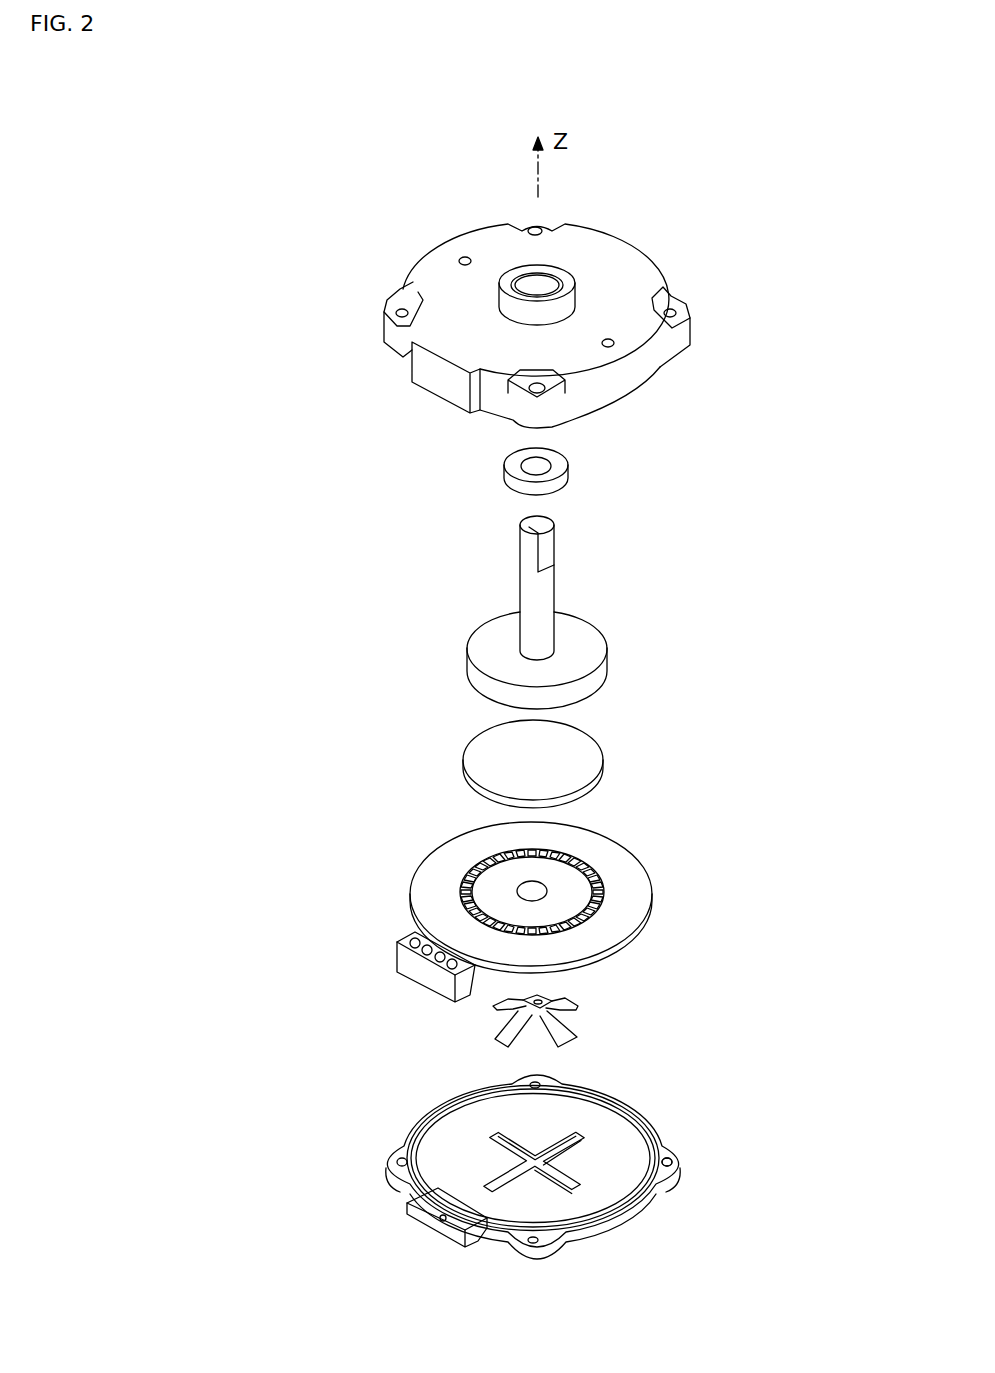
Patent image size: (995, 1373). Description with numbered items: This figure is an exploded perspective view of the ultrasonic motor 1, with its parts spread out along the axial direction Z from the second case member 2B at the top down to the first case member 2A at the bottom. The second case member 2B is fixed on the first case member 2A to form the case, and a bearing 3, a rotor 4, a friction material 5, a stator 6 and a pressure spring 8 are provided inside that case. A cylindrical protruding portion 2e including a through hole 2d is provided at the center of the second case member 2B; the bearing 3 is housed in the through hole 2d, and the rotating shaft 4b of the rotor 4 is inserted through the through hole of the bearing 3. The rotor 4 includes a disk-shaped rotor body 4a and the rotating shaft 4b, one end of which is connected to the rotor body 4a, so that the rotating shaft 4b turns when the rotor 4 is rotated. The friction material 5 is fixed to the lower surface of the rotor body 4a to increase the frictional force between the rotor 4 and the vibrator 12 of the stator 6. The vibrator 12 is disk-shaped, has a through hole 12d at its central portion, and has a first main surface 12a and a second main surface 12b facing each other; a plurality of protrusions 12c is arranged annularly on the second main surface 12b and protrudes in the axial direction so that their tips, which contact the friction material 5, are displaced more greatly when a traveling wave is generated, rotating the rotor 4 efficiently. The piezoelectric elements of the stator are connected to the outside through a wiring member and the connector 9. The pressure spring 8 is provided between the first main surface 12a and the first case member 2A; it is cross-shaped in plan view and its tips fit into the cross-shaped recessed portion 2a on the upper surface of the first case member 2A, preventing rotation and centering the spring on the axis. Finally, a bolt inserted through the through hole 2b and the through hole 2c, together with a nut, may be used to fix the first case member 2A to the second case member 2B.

The ultrasonic motor 1 is at (270, 191).
The second case member 2B is at (384, 330).
The cylindrical protruding portion 2e is at (560, 272).
The through hole 2d is at (548, 291).
The through hole 2c is at (687, 311).
The bearing 3 is at (534, 472).
The rotor 4 is at (523, 516).
The rotating shaft 4b is at (533, 598).
The rotor body 4a is at (487, 651).
The friction material 5 is at (470, 762).
The stator 6 is at (433, 846).
The vibrator 12 is at (638, 855).
The first main surface 12a is at (600, 960).
The second main surface 12b is at (595, 836).
The protrusions 12c is at (603, 888).
The through hole 12d is at (528, 888).
The connector 9 is at (395, 958).
The pressure spring 8 is at (495, 1028).
The first case member 2A is at (382, 1167).
The recessed portion 2a is at (495, 1144).
The through hole 2b is at (690, 1158).